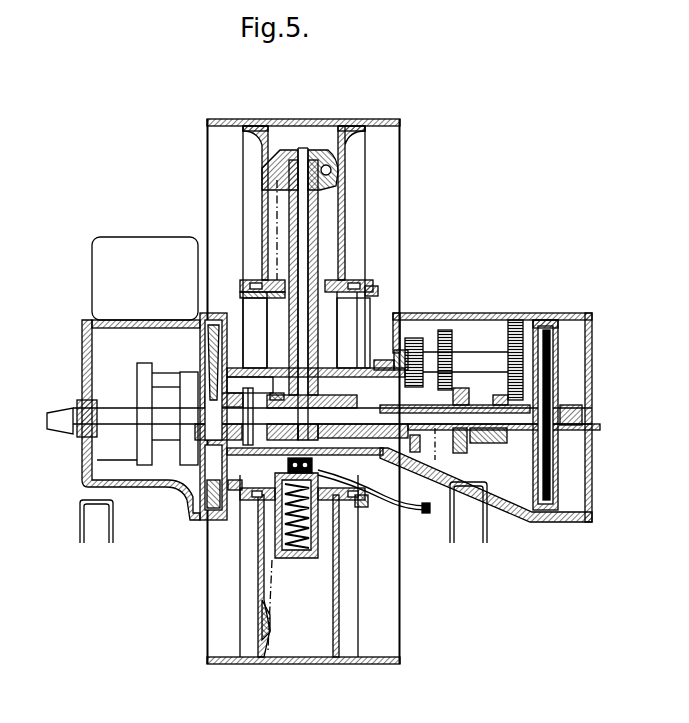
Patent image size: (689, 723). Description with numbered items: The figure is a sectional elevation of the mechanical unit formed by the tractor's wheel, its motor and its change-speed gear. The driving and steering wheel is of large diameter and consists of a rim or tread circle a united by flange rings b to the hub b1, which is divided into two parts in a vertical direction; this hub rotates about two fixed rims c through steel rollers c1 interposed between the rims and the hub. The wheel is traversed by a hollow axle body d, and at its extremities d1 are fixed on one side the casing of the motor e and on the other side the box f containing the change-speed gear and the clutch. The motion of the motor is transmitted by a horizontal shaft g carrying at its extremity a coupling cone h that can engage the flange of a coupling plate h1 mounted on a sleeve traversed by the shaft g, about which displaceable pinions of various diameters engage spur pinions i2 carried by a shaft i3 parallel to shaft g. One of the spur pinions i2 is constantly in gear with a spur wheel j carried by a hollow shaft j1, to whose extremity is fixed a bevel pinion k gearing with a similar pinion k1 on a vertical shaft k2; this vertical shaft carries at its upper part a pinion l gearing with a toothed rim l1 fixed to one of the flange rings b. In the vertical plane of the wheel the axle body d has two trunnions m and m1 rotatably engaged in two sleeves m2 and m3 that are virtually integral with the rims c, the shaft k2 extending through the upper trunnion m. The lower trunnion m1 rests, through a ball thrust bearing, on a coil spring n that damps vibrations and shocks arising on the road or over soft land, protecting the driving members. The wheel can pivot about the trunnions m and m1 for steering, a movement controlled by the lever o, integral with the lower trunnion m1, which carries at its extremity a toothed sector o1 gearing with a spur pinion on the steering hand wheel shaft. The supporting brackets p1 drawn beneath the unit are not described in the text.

The rim or tread circle a is at (292, 119).
The flange rings b is at (262, 218).
The hub b1 is at (375, 510).
The fixed rims c is at (350, 291).
The steel rollers c1 is at (255, 281).
The hollow axle body d is at (253, 367).
The extremities of the axle body d1 is at (147, 488).
The motor casing e is at (145, 278).
The box f is at (458, 313).
The horizontal shaft g is at (284, 413).
The coupling cone h is at (575, 366).
The coupling plate h1 is at (543, 340).
The spur pinions i2 is at (452, 332).
The shaft i3 is at (472, 362).
The spur wheel j is at (412, 465).
The hollow shaft j1 is at (376, 368).
The bevel pinion k is at (322, 426).
The bevel pinion k1 is at (272, 405).
The vertical shaft k2 is at (303, 218).
The pinion l is at (325, 167).
The toothed rim l1 is at (285, 622).
The upper trunnion m is at (322, 202).
The lower trunnion m1 is at (315, 560).
The sleeve m2 is at (275, 298).
The sleeve m3 is at (275, 540).
The coil spring n is at (298, 558).
The lever o is at (407, 500).
The toothed sector o1 is at (426, 514).
The supporting brackets p1 is at (484, 543).